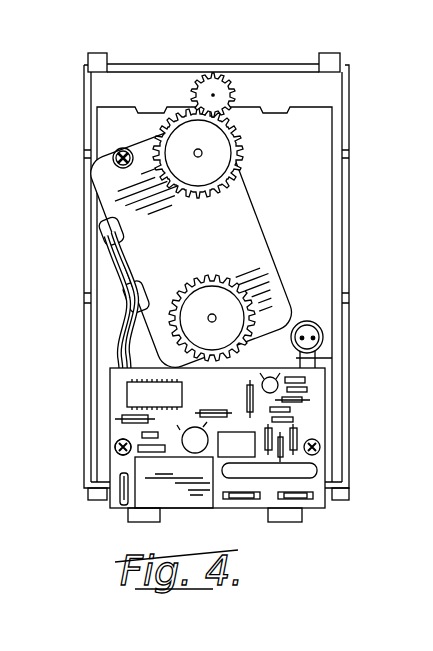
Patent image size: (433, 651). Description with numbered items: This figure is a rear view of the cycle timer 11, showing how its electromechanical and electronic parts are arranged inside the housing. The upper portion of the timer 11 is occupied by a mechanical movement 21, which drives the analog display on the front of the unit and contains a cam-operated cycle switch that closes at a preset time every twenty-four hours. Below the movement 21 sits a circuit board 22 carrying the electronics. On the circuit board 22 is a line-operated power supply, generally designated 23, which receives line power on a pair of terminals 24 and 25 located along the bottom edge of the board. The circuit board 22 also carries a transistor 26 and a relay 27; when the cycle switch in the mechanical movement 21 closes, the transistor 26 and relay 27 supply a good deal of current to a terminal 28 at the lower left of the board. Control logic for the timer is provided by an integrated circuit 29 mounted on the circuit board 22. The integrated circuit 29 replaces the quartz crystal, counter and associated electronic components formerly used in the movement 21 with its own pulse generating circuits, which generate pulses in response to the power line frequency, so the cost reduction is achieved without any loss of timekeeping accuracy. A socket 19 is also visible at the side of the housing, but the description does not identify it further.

The cycle timer 11 is at (362, 82).
The power socket 19 is at (322, 331).
The mechanical movement 21 is at (108, 193).
The circuit board 22 is at (115, 436).
The line-operated power supply 23 is at (221, 456).
The terminal 24 is at (243, 499).
The terminal 25 is at (300, 499).
The transistor 26 is at (320, 384).
The relay 27 is at (158, 498).
The terminal 28 is at (121, 494).
The integrated circuit 29 is at (148, 393).